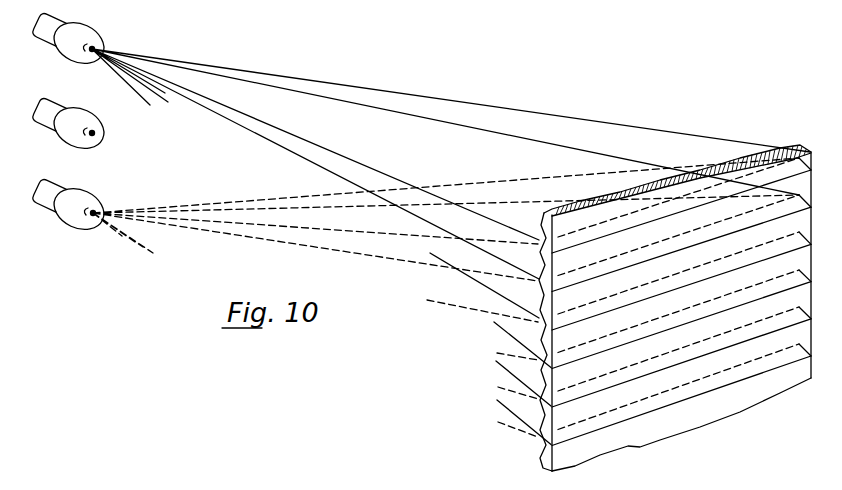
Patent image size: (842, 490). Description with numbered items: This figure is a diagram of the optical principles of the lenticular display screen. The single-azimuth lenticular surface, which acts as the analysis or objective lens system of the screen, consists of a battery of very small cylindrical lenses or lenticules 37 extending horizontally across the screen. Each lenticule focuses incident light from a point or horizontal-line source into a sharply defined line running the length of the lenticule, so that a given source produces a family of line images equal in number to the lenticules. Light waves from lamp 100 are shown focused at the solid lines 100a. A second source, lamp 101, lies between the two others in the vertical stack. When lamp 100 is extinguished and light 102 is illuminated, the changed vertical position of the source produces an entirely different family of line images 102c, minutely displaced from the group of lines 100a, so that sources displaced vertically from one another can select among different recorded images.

The lamp 100 is at (110, 24).
The light source / lamp 101 is at (99, 140).
The light 102 is at (80, 222).
The lenticules 37 is at (537, 340).
The solid lines 100a is at (629, 420).
The line images 102c is at (717, 373).